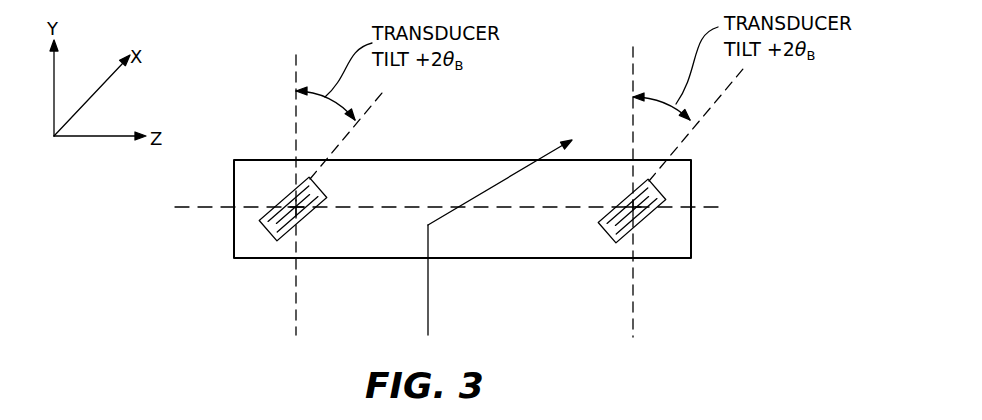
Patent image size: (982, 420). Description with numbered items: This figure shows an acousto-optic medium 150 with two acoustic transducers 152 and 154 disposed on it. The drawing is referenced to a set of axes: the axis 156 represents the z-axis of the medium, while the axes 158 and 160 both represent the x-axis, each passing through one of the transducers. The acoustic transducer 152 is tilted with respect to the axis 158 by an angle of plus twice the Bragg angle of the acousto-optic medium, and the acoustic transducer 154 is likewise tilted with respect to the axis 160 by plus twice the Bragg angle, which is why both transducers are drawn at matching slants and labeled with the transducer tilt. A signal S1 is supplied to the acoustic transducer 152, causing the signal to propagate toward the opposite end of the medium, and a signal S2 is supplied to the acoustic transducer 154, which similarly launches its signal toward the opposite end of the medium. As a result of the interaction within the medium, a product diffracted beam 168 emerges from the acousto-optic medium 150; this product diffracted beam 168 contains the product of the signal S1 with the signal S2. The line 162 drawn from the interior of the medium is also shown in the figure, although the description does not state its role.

The acousto-optic medium 150 is at (692, 258).
The acoustic transducer 152 is at (603, 236).
The acoustic transducer 154 is at (283, 244).
The axis 156 is at (178, 214).
The axis 158 is at (633, 333).
The axis 160 is at (296, 330).
The incident light beam 162 is at (430, 310).
The product diffracted beam 168 is at (568, 140).
The signal S1 is at (662, 192).
The signal S2 is at (285, 195).